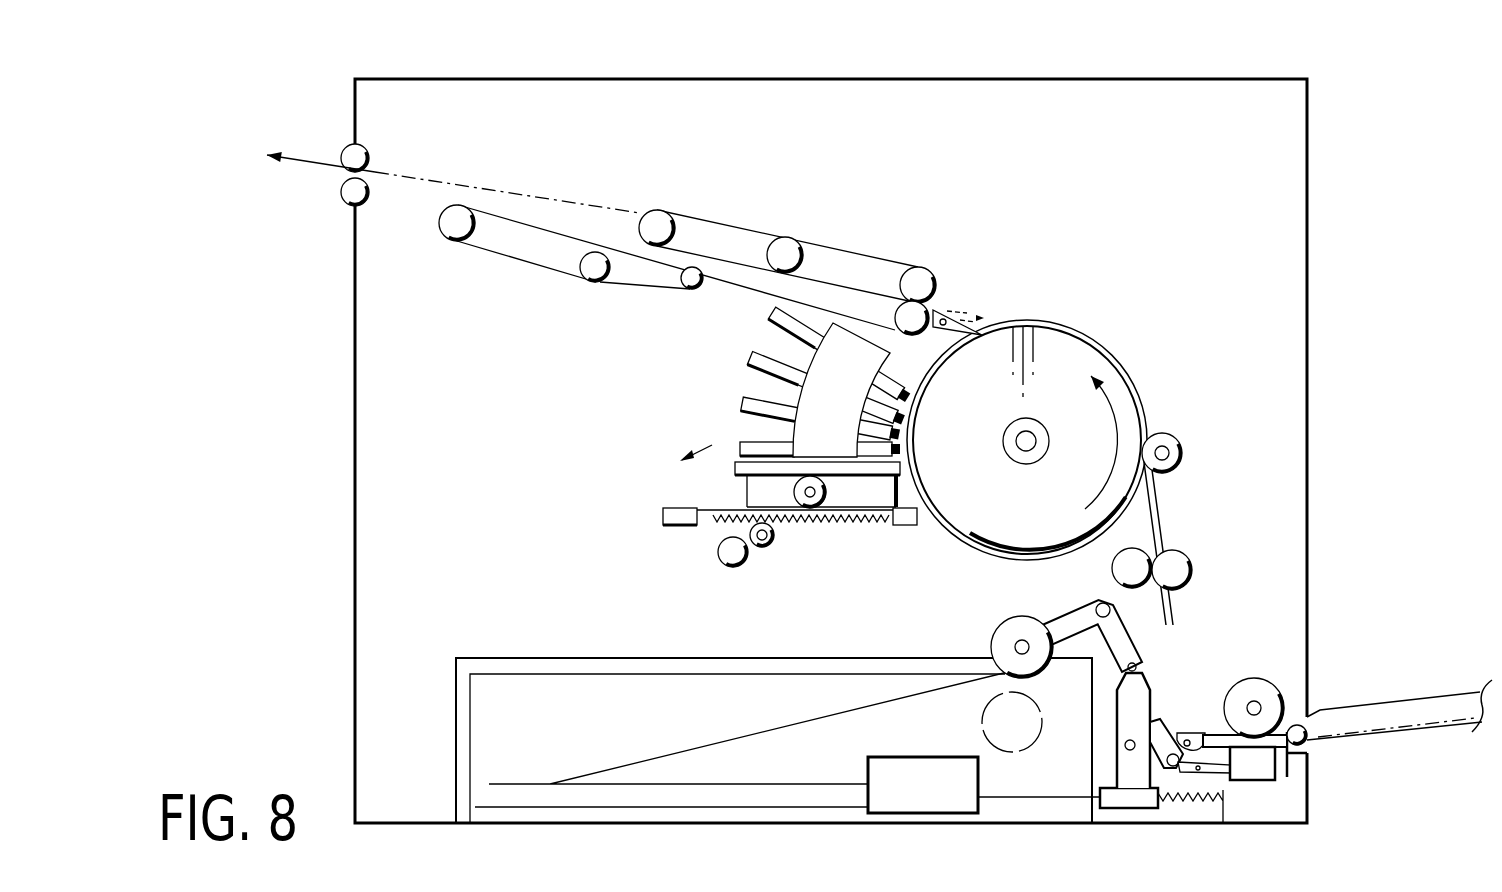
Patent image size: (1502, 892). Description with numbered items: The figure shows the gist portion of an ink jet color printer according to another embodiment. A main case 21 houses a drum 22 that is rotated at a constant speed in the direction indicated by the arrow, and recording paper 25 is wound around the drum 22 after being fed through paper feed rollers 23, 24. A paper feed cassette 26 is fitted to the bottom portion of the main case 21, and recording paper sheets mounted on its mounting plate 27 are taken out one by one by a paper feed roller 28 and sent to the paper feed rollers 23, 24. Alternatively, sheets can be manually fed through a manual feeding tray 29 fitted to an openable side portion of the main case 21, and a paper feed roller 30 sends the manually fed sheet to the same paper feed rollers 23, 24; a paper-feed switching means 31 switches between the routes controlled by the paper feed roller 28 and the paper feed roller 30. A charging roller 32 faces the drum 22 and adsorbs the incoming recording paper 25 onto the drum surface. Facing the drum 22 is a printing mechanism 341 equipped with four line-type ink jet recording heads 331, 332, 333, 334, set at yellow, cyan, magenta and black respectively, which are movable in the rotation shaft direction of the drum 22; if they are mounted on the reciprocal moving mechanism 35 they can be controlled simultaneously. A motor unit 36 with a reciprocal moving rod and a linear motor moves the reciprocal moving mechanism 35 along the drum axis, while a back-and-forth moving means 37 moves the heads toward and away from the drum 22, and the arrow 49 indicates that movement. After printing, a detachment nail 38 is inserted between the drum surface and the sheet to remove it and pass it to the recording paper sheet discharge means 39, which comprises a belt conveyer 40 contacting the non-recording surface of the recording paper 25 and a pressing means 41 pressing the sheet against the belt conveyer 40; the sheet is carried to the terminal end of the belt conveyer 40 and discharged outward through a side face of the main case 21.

The main case 21 is at (1308, 230).
The drum 22 is at (1053, 355).
The paper feed roller 23 is at (1112, 572).
The paper feed roller 24 is at (1193, 562).
The recording paper 25 is at (1152, 493).
The paper feed cassette 26 is at (772, 805).
The mounting plate 27 is at (742, 738).
The paper feed roller 28 is at (1006, 624).
The manual feeding tray 29 is at (1392, 692).
The paper feed roller 30 is at (1243, 692).
The paper-feed switching means 31 is at (1115, 760).
The charging roller 32 is at (1185, 452).
The reciprocal moving mechanism 35 is at (733, 450).
The motor unit 36 is at (797, 490).
The back-and-forth moving means 37 is at (710, 542).
The detachment nail 38 is at (958, 318).
The recording paper sheet discharge means 39 is at (793, 230).
The belt conveyer 40 is at (560, 270).
The pressing means 41 is at (718, 222).
The moving direction of developing device 49 is at (700, 447).
The ink jet recording head 331 is at (737, 440).
The ink jet recording head 332 is at (740, 395).
The ink jet recording head 333 is at (743, 343).
The ink jet recording head 334 is at (747, 300).
The printing mechanism 341 is at (777, 552).